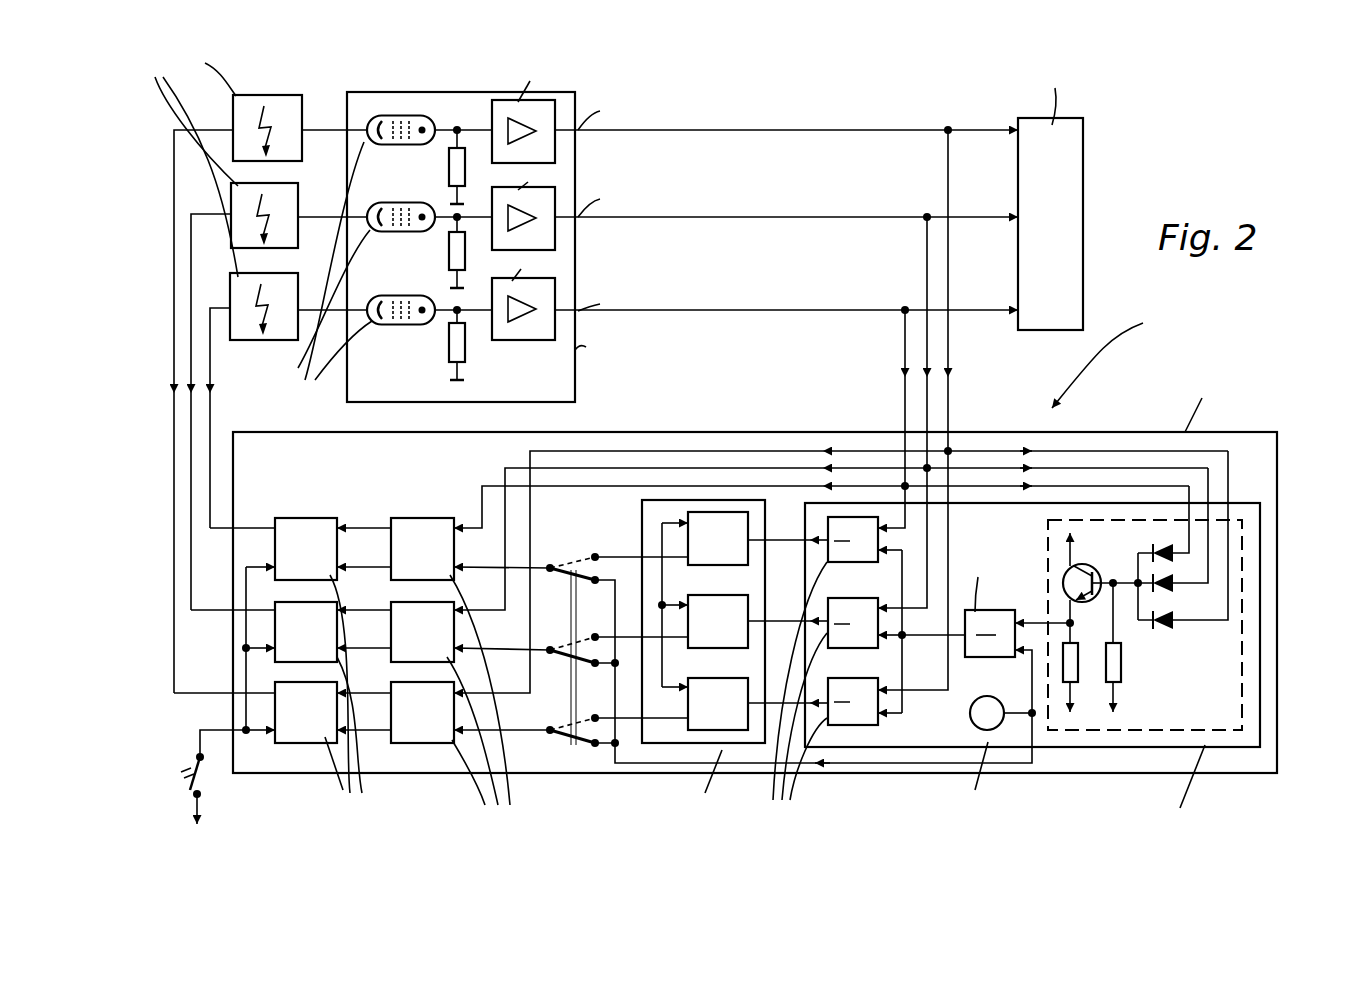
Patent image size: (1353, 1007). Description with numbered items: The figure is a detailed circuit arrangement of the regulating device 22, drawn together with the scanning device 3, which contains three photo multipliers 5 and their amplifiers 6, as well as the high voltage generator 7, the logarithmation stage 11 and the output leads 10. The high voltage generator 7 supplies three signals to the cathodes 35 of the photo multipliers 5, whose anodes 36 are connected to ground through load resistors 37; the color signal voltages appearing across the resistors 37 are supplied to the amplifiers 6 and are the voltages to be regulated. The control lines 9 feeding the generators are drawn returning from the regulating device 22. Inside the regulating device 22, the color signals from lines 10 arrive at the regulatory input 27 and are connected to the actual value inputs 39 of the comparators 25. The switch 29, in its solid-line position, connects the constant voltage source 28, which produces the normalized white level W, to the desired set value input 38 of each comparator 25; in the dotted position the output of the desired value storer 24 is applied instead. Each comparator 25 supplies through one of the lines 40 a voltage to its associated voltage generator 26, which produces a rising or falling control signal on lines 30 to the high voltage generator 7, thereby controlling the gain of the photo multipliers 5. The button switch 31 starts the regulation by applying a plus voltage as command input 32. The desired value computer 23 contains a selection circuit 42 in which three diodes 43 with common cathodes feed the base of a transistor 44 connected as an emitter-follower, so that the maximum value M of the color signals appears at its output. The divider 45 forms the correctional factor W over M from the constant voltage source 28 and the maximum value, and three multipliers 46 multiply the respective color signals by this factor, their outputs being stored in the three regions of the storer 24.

The scanning device 3 is at (578, 380).
The photo multipliers 5 is at (340, 247).
The amplifiers 6 is at (522, 334).
The high voltage generator 7 is at (243, 118).
The control lines to high voltage generators 9 is at (185, 357).
The lines 10 is at (763, 132).
The logarithmation stage 11 is at (1072, 183).
The regulating device 22 is at (1108, 443).
The desired value computer 23 is at (1121, 686).
The storage means 24 is at (645, 508).
The comparator 25 is at (405, 528).
The voltage generator 26 is at (290, 530).
The regulatory input 27 is at (913, 426).
The constant voltage source 28 is at (984, 698).
The switch 29 is at (573, 562).
The lines 30 is at (222, 587).
The button switch 31 is at (196, 760).
The command input 32 is at (218, 746).
The cathodes 35 is at (381, 130).
The anodes 36 is at (420, 131).
The load resistors 37 is at (452, 160).
The desired set value input 38 is at (457, 574).
The actual value inputs 39 is at (462, 528).
The lines 40 is at (358, 547).
The selection circuit 42 is at (1071, 624).
The diodes 43 is at (1162, 548).
The transistor 44 is at (1084, 566).
The divider 45 is at (1002, 618).
The multipliers 46 is at (872, 724).